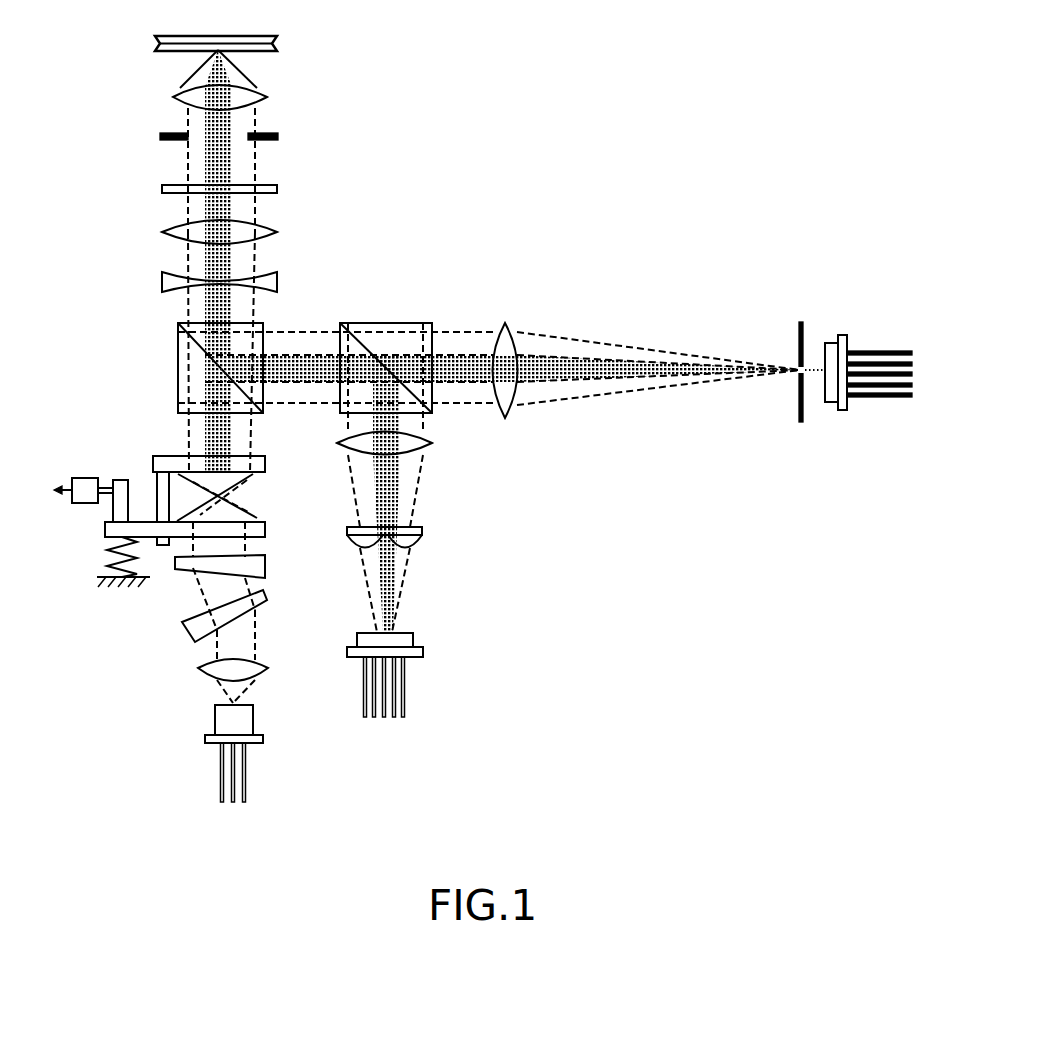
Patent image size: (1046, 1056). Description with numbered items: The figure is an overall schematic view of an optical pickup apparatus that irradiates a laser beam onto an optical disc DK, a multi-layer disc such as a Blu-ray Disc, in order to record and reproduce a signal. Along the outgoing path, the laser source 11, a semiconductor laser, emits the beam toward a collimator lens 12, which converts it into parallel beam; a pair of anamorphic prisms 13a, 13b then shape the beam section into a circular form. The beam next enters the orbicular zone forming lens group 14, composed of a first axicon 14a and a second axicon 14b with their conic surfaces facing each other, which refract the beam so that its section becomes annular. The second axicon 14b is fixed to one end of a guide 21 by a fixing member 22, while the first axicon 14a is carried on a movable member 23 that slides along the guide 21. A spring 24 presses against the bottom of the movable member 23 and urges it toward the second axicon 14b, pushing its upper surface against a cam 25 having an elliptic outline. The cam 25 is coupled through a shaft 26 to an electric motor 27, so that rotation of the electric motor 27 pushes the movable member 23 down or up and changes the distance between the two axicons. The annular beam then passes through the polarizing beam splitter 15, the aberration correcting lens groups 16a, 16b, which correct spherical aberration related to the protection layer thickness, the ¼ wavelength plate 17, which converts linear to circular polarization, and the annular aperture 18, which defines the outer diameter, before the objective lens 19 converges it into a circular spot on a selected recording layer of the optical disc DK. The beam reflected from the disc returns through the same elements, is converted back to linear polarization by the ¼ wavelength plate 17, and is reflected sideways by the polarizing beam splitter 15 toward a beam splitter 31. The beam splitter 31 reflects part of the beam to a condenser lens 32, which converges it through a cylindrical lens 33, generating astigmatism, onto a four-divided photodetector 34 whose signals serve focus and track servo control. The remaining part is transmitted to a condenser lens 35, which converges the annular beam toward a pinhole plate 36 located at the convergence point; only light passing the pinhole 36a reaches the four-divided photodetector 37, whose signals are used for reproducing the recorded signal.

The optical disc DK is at (252, 36).
The laser source 11 is at (215, 722).
The collimator lens 12 is at (198, 668).
The anamorphic prism 13a is at (190, 634).
The anamorphic prism 13b is at (268, 566).
The orbicular zone forming lens group 14 is at (265, 499).
The first axicon 14a is at (252, 521).
The second axicon 14b is at (256, 478).
The polarizing beam splitter 15 is at (178, 368).
The aberration correcting lens group 16a is at (162, 282).
The aberration correcting lens group 16b is at (162, 232).
The ¼ wavelength plate 17 is at (162, 189).
The aperture 18 is at (160, 137).
The objective lens 19 is at (178, 86).
The guide 21 is at (157, 497).
The fixing member 22 is at (167, 456).
The movable member 23 is at (105, 530).
The spring 24 is at (107, 558).
The cam 25 is at (118, 480).
The shaft 26 is at (104, 493).
The electric motor 27 is at (88, 478).
The beam splitter 31 is at (396, 323).
The condenser lens 32 is at (432, 443).
The cylindrical lens 33 is at (422, 533).
The photodetector 34 is at (423, 651).
The condenser lens 35 is at (507, 323).
The pinhole plate 36 is at (799, 331).
The pinhole 36a is at (797, 374).
The photodetector 37 is at (826, 343).